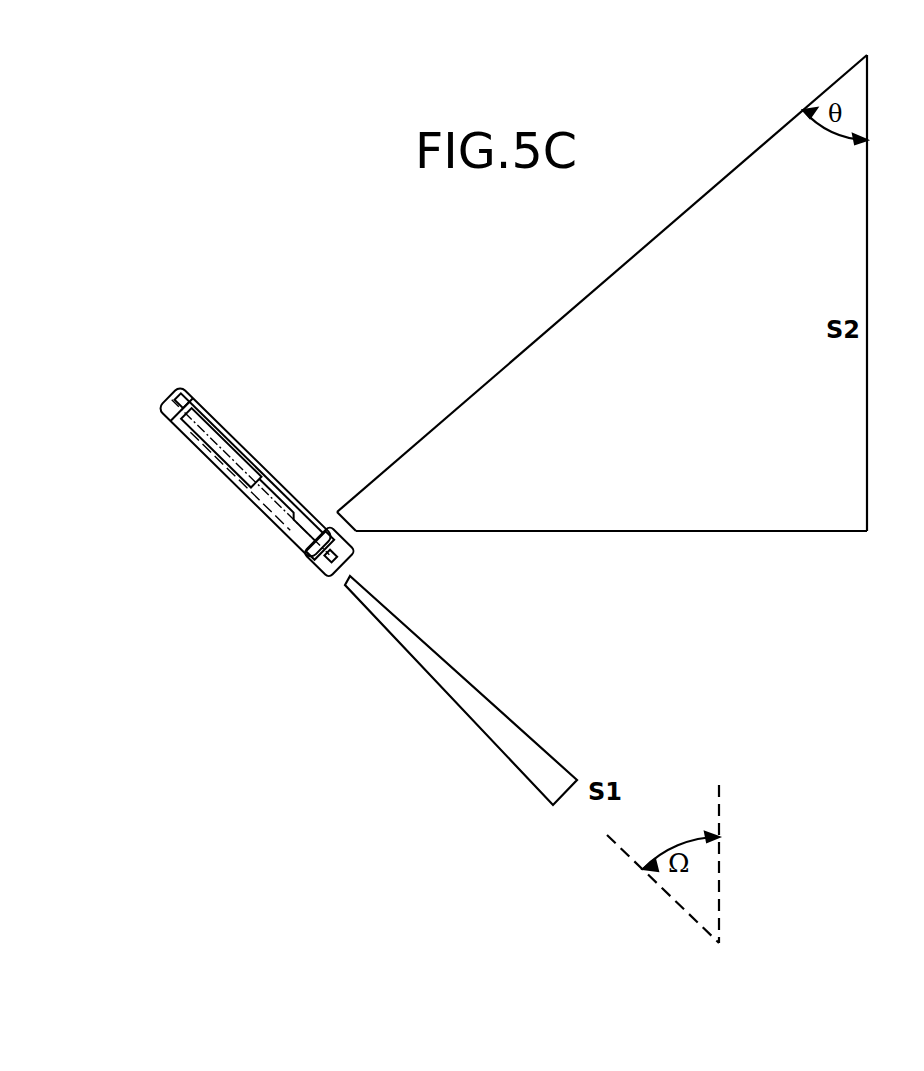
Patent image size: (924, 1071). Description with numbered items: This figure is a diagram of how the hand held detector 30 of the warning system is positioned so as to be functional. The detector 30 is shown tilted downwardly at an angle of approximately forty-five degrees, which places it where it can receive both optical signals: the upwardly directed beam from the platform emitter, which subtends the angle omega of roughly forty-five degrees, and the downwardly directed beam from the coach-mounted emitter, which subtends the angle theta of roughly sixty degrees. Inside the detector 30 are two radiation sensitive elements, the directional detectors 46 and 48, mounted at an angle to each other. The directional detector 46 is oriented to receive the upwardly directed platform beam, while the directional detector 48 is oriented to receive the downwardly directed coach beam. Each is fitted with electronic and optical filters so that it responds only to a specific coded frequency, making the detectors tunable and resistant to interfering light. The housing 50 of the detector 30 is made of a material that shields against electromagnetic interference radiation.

The detector 30 is at (232, 438).
The housing 50 is at (202, 396).
The directional detector 48 is at (331, 527).
The directional detector 46 is at (334, 581).